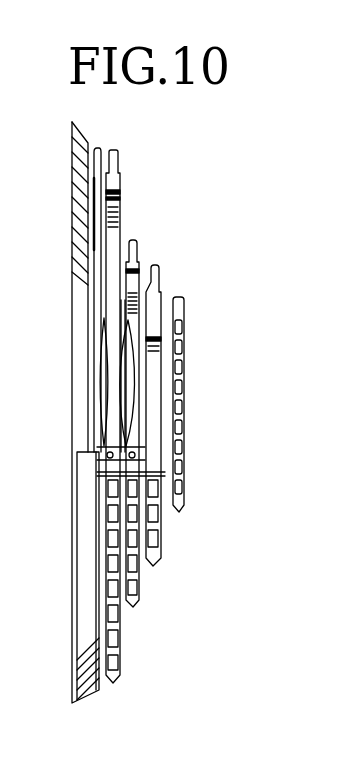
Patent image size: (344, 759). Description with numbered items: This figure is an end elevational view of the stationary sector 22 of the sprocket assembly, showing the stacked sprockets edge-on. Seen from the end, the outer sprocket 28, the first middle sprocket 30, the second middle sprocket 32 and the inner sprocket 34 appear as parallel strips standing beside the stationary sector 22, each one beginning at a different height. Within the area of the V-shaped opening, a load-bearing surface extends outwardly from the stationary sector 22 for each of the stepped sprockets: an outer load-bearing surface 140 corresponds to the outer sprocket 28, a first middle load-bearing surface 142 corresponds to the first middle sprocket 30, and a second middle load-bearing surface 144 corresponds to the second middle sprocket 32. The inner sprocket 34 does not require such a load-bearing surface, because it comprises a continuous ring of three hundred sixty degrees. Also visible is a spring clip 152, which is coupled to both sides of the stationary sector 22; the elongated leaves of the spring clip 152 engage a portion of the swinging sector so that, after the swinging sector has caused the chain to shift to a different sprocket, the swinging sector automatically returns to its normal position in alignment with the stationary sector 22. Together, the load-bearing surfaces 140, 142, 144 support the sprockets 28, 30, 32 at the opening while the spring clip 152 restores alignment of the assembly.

The stationary sector 22 is at (82, 540).
The outer sprocket 28 is at (117, 153).
The first middle sprocket 30 is at (140, 252).
The second middle sprocket 32 is at (162, 300).
The inner sprocket 34 is at (183, 311).
The outer load-bearing surface 140 is at (102, 299).
The first middle load-bearing surface 142 is at (122, 303).
The second middle load-bearing surface 144 is at (155, 454).
The spring clip 152 is at (108, 334).